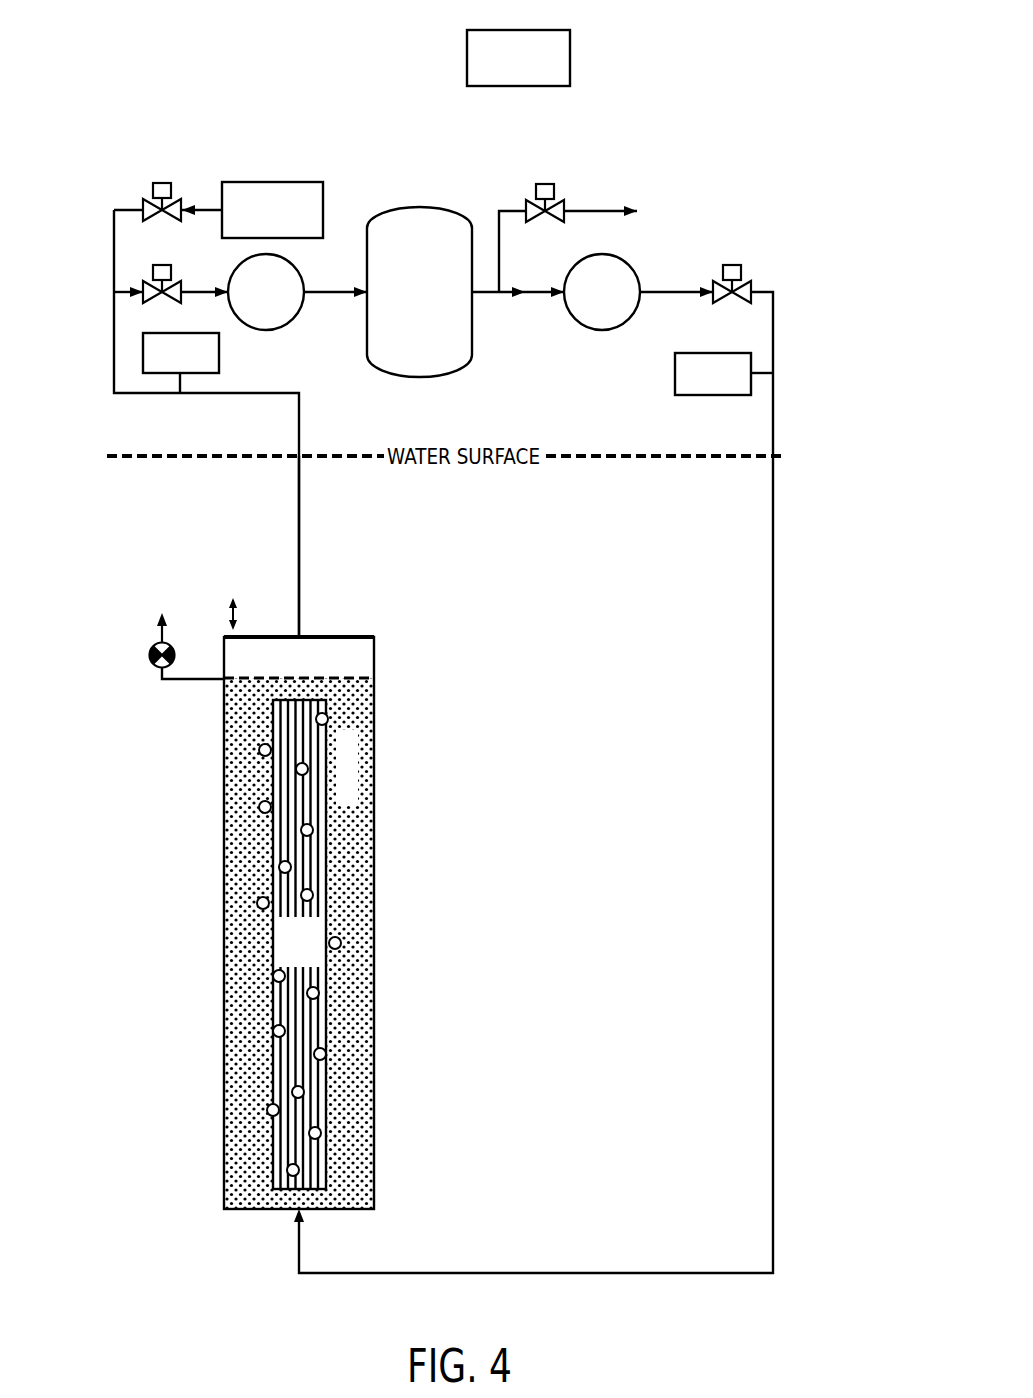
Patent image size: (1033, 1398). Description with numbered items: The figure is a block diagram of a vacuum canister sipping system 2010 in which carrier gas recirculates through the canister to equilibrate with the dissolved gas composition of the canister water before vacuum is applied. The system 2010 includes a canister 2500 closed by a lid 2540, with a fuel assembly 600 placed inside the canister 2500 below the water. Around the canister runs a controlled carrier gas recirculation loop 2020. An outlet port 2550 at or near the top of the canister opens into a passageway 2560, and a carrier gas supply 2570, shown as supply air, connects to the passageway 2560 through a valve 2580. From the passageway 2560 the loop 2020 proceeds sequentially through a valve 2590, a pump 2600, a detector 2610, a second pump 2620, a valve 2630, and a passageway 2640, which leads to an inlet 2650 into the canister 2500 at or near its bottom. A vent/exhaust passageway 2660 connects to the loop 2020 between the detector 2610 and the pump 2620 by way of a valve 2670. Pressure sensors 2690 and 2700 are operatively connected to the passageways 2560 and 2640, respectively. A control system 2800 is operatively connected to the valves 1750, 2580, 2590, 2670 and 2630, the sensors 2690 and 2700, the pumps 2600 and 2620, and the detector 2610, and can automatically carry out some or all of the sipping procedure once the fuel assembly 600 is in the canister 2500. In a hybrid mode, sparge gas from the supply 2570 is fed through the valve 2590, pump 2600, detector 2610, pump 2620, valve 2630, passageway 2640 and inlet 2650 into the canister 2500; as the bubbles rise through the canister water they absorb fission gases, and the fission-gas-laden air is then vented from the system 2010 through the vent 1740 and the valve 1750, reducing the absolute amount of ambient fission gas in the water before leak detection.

The system 2010 is at (158, 76).
The control system 2800 is at (518, 58).
The valve 2580 is at (175, 182).
The carrier gas supply 2570 is at (258, 182).
The carrier gas recirculation loop 2020 is at (350, 200).
The valve 2670 is at (537, 184).
The vent/exhaust passageway 2660 is at (598, 209).
The valve 2590 is at (153, 278).
The pump 2600 is at (296, 316).
The detector 2610 is at (442, 378).
The pump 2620 is at (572, 318).
The valve 2630 is at (742, 272).
The pressure sensor 2690 is at (143, 356).
The pressure sensor 2700 is at (675, 382).
The passageway 2640 is at (773, 700).
The passageway 2560 is at (300, 513).
The outlet port 2550 is at (300, 636).
The lid 2540 is at (333, 636).
The canister 2500 is at (375, 865).
The fuel assembly 600 is at (328, 843).
The valve 1750 is at (150, 655).
The vent 1740 is at (188, 683).
The inlet 2650 is at (297, 1212).